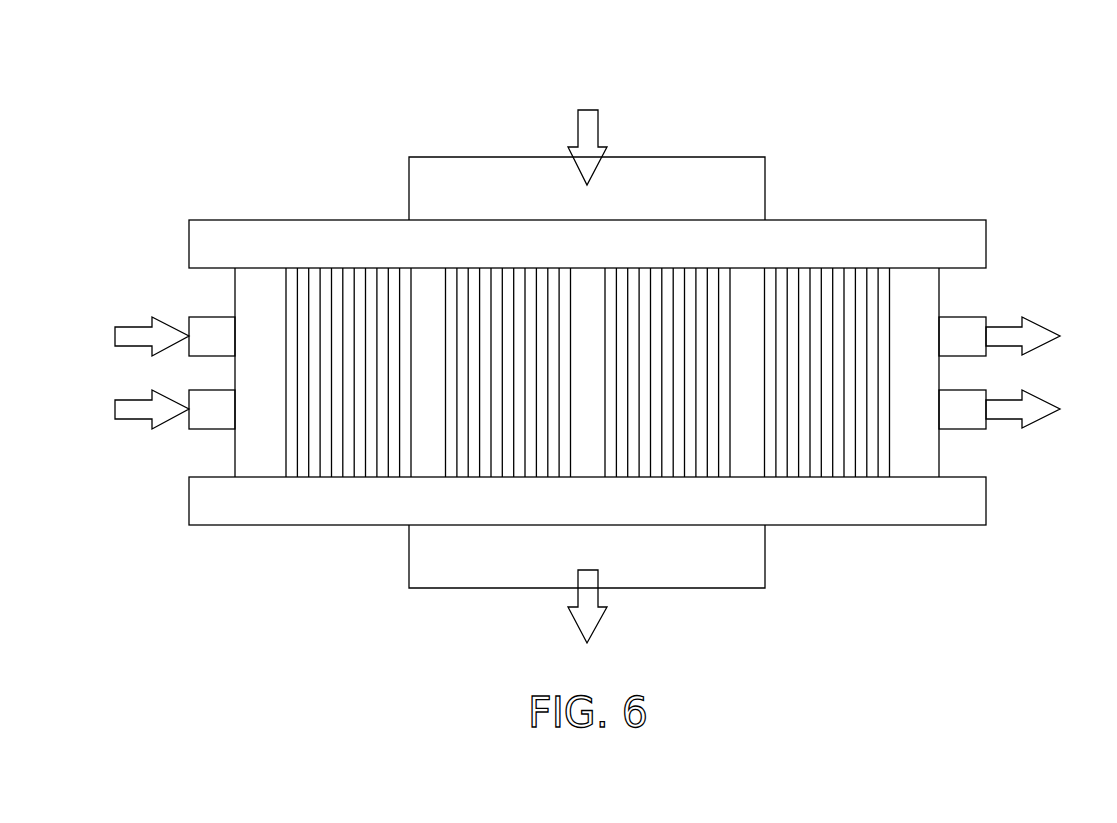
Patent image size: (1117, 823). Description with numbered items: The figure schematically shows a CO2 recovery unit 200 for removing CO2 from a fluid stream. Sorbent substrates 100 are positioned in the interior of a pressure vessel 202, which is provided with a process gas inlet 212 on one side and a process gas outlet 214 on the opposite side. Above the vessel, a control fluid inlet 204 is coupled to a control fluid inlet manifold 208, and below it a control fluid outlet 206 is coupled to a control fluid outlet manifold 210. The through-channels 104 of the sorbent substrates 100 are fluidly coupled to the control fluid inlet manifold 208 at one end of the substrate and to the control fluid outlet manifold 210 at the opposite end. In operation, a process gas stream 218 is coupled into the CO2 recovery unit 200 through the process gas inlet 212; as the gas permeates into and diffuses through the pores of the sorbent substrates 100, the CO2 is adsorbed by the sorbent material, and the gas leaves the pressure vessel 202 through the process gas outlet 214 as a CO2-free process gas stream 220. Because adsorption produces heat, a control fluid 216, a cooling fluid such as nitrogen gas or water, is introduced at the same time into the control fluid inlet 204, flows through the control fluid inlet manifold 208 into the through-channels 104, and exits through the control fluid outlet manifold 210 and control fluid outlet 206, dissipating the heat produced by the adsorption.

The CO2 recovery unit 200 is at (918, 118).
The pressure vessel 202 is at (940, 213).
The control fluid inlet 204 is at (447, 157).
The control fluid outlet 206 is at (766, 586).
The control fluid inlet manifold 208 is at (269, 220).
The control fluid outlet manifold 210 is at (208, 528).
The process gas inlet 212 is at (189, 316).
The process gas outlet 214 is at (986, 316).
The control fluid 216 is at (588, 110).
The process gas stream 218 is at (115, 336).
The CO2-free process gas stream 220 is at (1048, 327).
The sorbent substrate 100 is at (278, 313).
The through-channels 104 is at (812, 270).